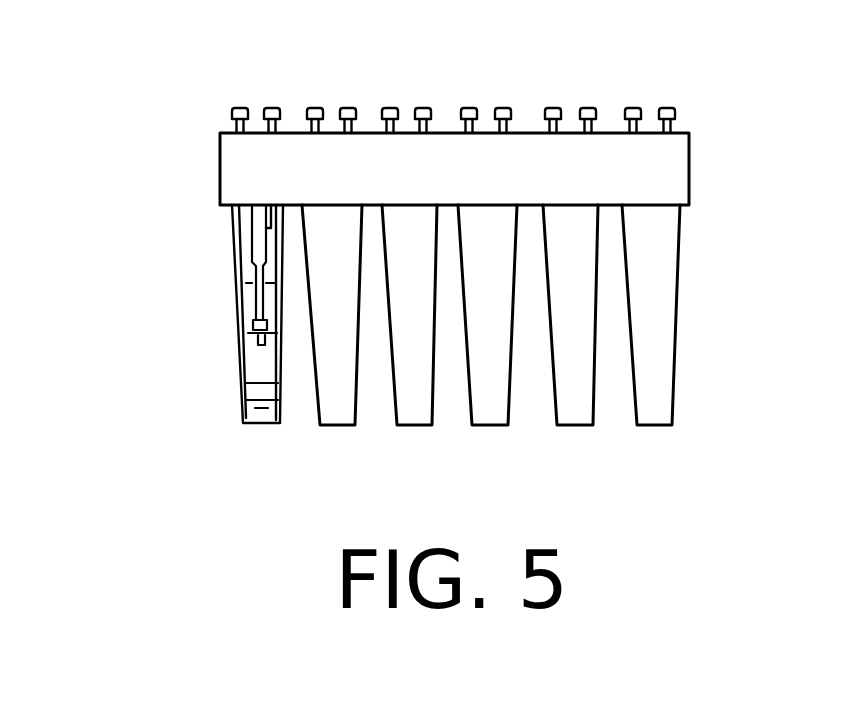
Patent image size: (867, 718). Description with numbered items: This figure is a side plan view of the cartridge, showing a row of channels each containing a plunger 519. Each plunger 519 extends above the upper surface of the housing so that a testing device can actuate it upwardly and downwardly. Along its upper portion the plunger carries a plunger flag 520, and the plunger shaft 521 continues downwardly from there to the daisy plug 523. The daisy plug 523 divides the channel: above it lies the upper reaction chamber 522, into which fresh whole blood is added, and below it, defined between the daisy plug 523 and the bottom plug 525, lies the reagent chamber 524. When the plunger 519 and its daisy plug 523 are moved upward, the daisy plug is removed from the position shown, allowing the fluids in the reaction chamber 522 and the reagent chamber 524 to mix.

The plunger 519 is at (255, 100).
The plunger flag 520 is at (228, 210).
The plunger shaft 521 is at (242, 240).
The upper reaction chamber 522 is at (242, 283).
The daisy plug 523 is at (240, 325).
The reagent chamber 524 is at (247, 362).
The bottom plug 525 is at (237, 407).